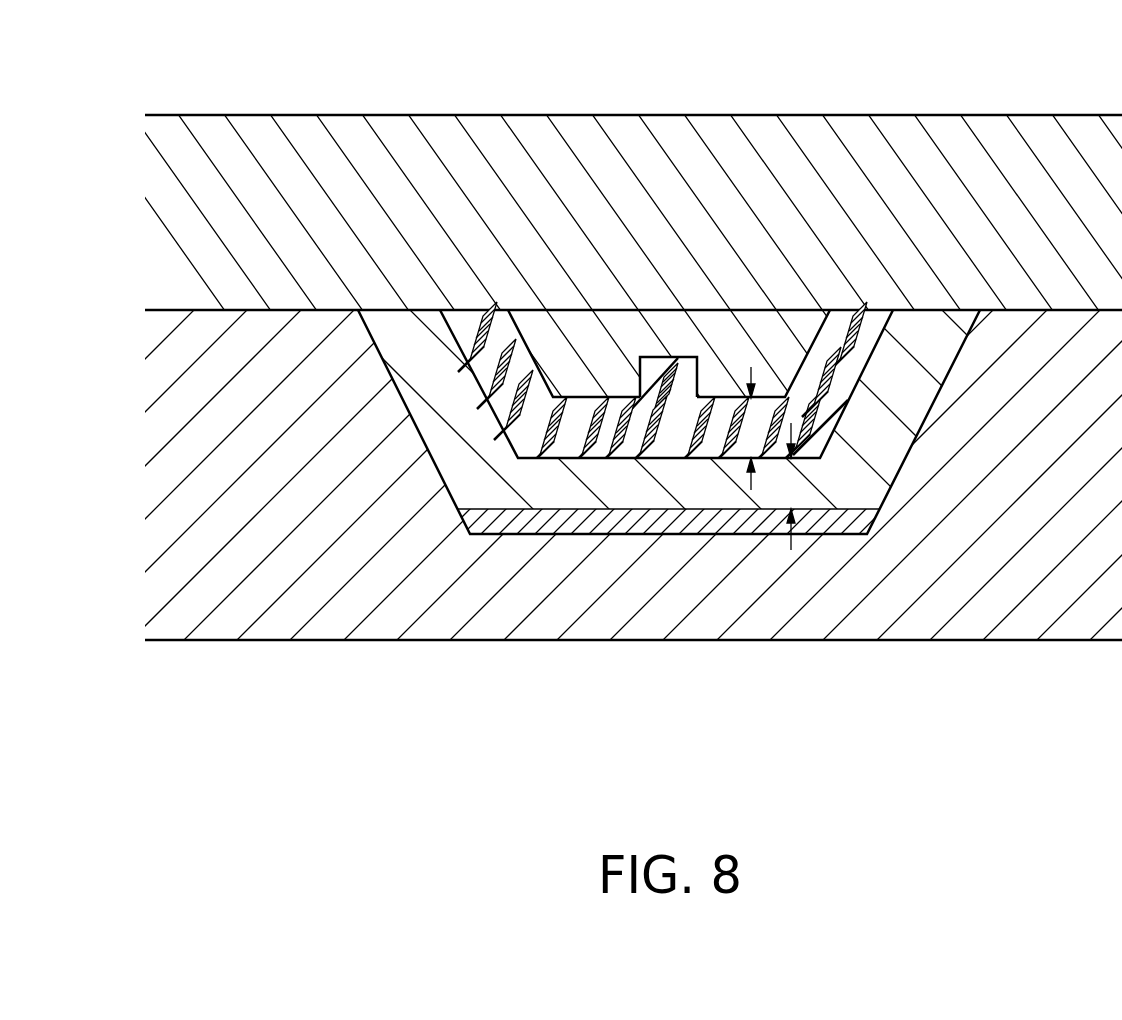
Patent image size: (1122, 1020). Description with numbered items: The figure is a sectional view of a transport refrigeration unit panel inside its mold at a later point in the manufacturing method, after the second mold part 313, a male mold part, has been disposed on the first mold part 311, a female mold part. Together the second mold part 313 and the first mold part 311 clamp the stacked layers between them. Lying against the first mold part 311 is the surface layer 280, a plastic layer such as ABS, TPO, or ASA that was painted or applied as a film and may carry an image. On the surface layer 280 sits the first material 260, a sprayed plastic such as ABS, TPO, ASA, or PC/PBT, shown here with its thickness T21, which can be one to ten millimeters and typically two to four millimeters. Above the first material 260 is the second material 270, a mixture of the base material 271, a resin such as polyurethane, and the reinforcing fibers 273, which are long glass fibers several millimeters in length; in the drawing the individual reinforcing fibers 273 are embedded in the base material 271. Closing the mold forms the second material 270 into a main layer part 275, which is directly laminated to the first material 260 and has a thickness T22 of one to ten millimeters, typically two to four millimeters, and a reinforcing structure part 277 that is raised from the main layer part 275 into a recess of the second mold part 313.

The second mold part 313 is at (222, 127).
The first mold part 311 is at (545, 630).
The first material 260 is at (860, 462).
The surface layer 280 is at (842, 520).
The main layer part 275 is at (720, 410).
The reinforcing structure part 277 is at (653, 367).
The reinforcing fibers 273 is at (630, 430).
The base material 271 is at (680, 430).
The second material 270 is at (797, 697).
The thickness of the main layer part T22 is at (753, 400).
The thickness of the first material T21 is at (791, 552).